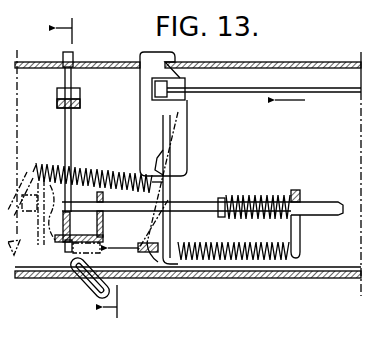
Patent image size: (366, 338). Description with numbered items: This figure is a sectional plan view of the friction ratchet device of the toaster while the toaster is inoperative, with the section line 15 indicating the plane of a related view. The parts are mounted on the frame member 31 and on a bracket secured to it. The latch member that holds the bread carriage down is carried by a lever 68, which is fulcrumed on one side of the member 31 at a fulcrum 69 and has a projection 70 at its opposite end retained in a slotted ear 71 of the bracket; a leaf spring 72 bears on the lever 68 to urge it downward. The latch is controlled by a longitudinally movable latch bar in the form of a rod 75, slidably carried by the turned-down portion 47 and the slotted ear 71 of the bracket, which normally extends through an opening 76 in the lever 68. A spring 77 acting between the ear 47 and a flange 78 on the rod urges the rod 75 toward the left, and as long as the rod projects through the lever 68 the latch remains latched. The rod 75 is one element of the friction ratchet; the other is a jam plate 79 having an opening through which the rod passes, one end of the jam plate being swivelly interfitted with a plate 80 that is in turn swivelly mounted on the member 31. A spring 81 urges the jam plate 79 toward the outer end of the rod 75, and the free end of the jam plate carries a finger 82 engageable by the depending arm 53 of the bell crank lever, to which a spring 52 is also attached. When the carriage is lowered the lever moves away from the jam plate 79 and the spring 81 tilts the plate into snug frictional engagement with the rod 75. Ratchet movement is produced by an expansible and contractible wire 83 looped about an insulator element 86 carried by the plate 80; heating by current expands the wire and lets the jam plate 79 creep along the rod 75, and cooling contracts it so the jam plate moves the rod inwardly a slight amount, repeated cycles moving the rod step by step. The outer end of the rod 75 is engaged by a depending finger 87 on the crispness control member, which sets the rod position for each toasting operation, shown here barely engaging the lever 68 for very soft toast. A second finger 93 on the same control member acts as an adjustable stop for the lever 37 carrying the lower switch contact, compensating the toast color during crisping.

The section line / viewing direction 15 is at (75, 28).
The member 31 is at (296, 57).
The lever 37 is at (307, 278).
The turned-down portion 47 is at (302, 236).
The spring 52 is at (253, 263).
The depending arm 53 is at (148, 262).
The lever 68 is at (73, 125).
The fulcrum 69 is at (75, 66).
The projection 70 is at (67, 250).
The slotted ear 71 is at (105, 227).
The leaf spring 72 is at (81, 98).
The rod 75 is at (316, 203).
The opening 76 is at (96, 170).
The spring 77 is at (267, 199).
The flange 78 is at (222, 198).
The jam plate 79 is at (172, 184).
The plate 80 is at (188, 127).
The spring 81 is at (54, 164).
The finger 82 is at (169, 266).
The wire 83 is at (324, 93).
The insulator element 86 is at (186, 99).
The depending finger 87 is at (31, 219).
The finger 93 is at (86, 278).